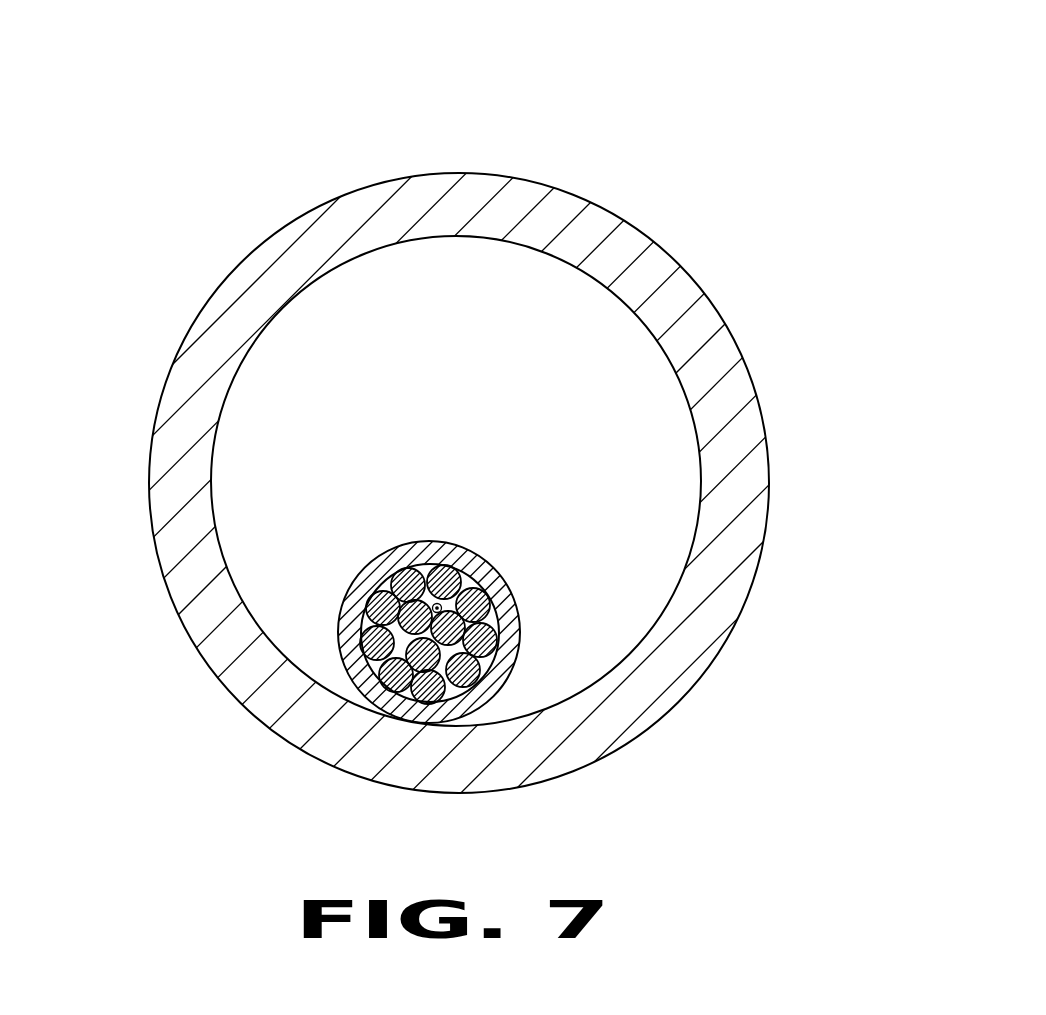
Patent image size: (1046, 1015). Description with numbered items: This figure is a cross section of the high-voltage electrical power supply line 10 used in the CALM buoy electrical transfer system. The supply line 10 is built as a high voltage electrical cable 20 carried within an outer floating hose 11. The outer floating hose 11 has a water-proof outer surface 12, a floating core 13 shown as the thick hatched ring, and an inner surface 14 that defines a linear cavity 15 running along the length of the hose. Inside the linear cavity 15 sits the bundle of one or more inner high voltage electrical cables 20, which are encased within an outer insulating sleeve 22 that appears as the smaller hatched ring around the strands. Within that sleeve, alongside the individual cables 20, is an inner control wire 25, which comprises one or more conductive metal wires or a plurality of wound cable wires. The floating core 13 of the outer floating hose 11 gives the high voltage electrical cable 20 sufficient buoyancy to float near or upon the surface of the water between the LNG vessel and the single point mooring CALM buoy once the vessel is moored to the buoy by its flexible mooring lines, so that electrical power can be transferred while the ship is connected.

The high-voltage electrical power supply line 10 is at (202, 98).
The outer floating hose 11 is at (523, 485).
The water-proof outer surface 12 is at (490, 172).
The floating core 13 is at (725, 595).
The inner surface 14 is at (243, 362).
The linear cavity 15 is at (472, 382).
The high voltage electrical cable 20 is at (372, 610).
The outer insulating sleeve 22 is at (493, 570).
The inner control wire 25 is at (437, 603).